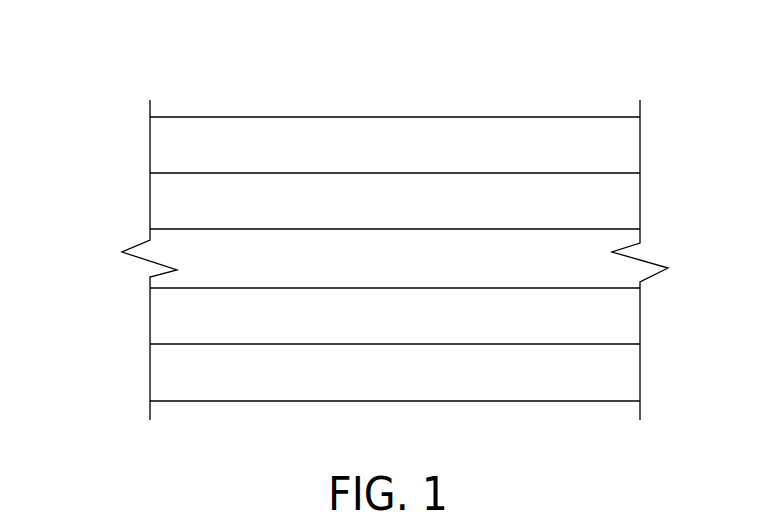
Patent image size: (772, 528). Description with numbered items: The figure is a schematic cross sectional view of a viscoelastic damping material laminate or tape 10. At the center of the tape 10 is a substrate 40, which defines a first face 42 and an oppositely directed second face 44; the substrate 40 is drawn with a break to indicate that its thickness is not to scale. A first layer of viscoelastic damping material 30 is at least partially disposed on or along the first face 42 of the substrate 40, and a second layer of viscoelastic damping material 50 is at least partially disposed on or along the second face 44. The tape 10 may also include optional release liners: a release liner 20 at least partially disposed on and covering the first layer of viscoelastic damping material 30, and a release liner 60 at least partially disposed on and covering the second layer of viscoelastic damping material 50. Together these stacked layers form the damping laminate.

The tape 10 is at (70, 82).
The release liner 20 is at (628, 147).
The first layer of viscoelastic damping material 30 is at (622, 205).
The substrate 40 is at (615, 272).
The first face 42 is at (188, 230).
The second face 44 is at (197, 287).
The second layer of viscoelastic damping material 50 is at (620, 313).
The release liner 60 is at (620, 373).